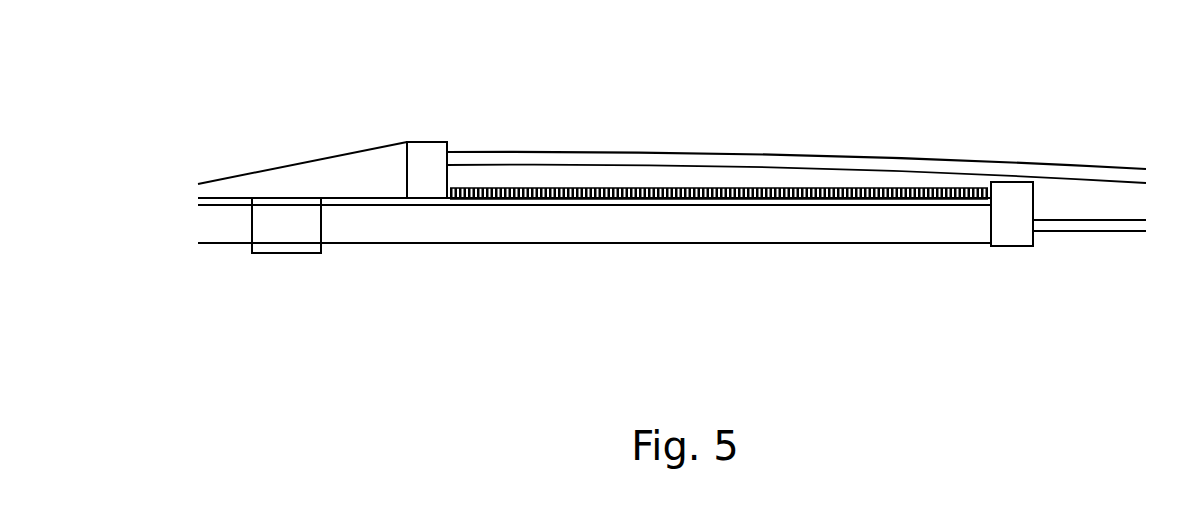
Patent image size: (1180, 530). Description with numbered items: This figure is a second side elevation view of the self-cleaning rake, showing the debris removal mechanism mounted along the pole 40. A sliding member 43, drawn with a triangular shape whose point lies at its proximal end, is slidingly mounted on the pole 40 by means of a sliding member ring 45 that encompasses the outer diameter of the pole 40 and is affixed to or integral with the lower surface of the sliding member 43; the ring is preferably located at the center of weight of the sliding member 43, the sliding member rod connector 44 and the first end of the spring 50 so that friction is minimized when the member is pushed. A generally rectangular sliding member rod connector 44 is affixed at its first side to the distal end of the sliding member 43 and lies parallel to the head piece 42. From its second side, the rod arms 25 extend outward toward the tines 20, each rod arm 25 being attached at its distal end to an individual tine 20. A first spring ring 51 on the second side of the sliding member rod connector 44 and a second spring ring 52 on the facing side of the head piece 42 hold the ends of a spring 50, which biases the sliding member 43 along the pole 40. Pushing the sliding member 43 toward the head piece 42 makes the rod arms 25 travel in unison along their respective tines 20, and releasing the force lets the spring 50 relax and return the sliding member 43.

The tines 20 is at (1092, 223).
The rod arms 25 is at (732, 162).
The pole 40 is at (756, 235).
The head piece 42 is at (1021, 198).
The sliding member 43 is at (337, 171).
The sliding member rod connector 44 is at (428, 155).
The sliding member ring 45 is at (295, 243).
The spring 50 is at (628, 188).
The first spring ring 51 is at (449, 141).
The second spring ring 52 is at (991, 182).